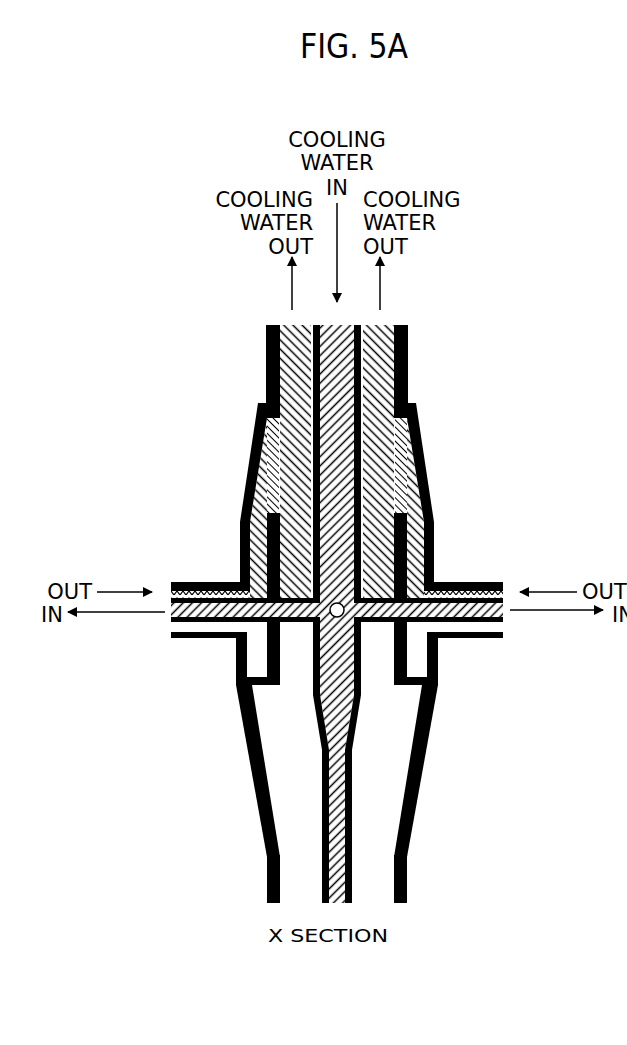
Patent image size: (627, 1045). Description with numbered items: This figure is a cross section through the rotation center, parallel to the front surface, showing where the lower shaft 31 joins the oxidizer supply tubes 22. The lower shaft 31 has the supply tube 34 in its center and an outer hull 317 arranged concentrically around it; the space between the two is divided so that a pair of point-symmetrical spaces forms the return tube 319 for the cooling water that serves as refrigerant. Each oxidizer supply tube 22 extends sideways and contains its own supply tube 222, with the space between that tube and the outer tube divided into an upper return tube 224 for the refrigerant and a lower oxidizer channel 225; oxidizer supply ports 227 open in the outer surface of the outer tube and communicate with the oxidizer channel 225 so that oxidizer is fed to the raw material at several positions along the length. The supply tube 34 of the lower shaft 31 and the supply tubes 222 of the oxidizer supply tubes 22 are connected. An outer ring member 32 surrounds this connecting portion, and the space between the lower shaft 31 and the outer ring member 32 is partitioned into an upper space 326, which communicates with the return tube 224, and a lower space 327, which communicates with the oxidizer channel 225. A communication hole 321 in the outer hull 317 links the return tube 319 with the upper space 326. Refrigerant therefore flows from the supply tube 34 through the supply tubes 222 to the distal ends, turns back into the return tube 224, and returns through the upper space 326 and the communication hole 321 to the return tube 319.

The oxidizer supply tube 22 is at (503, 583).
The lower shaft 31 is at (408, 878).
The outer ring member 32 is at (240, 518).
The supply tube 34 is at (363, 392).
The supply tube 222 is at (170, 620).
The return tube 224 is at (170, 585).
The oxidizer channel 225 is at (172, 632).
The oxidizer supply port 227 is at (233, 658).
The outer hull 317 is at (266, 358).
The return tube 319 is at (255, 467).
The communication hole 321 is at (253, 445).
The upper space 326 is at (240, 563).
The lower space 327 is at (440, 657).